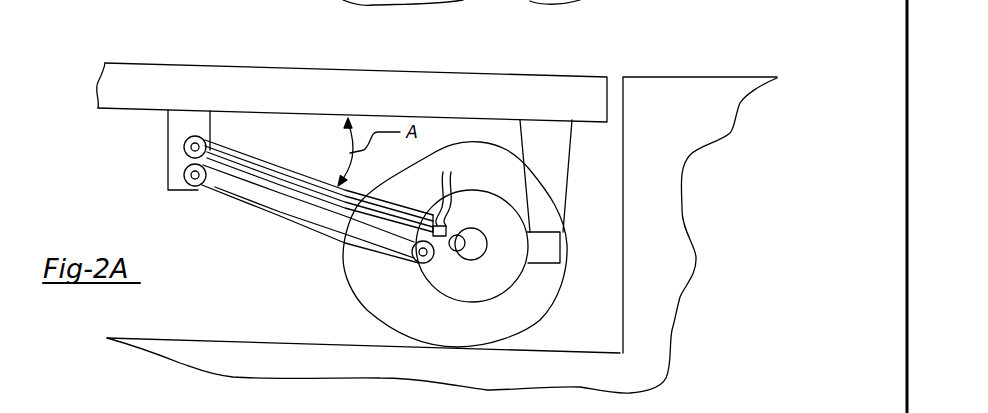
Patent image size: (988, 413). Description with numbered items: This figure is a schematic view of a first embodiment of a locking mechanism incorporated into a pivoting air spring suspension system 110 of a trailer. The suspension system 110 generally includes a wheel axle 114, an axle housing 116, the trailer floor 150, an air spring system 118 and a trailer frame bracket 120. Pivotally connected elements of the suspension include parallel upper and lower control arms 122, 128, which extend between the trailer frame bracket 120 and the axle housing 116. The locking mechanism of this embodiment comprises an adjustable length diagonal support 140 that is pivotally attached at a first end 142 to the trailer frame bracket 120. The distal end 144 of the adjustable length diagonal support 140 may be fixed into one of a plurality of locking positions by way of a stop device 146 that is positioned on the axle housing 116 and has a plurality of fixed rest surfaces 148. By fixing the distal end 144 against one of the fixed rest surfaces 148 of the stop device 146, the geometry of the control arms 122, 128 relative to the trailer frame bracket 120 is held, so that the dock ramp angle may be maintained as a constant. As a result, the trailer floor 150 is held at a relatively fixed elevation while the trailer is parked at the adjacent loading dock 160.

The pivoting air spring suspension system 110 is at (303, 267).
The wheel axle 114 is at (480, 250).
The axle housing 116 is at (513, 263).
The air spring system 118 is at (557, 137).
The trailer frame bracket 120 is at (177, 167).
The upper control arm 122 is at (274, 179).
The lower control arm 128 is at (278, 211).
The adjustable length diagonal support 140 is at (215, 163).
The first end 142 is at (161, 150).
The distal end 144 is at (424, 270).
The stop device 146 is at (457, 251).
The fixed rest surfaces 148 is at (449, 196).
The trailer floor 150 is at (347, 76).
The loading dock 160 is at (710, 112).